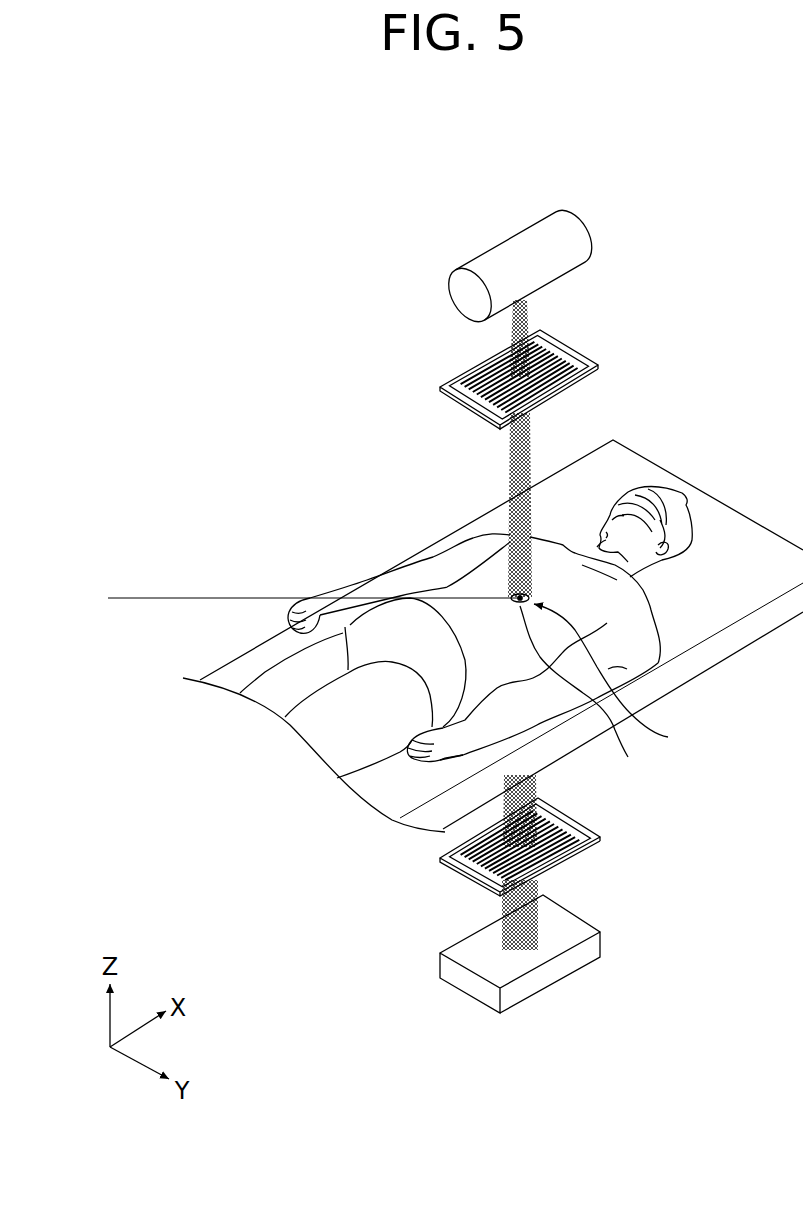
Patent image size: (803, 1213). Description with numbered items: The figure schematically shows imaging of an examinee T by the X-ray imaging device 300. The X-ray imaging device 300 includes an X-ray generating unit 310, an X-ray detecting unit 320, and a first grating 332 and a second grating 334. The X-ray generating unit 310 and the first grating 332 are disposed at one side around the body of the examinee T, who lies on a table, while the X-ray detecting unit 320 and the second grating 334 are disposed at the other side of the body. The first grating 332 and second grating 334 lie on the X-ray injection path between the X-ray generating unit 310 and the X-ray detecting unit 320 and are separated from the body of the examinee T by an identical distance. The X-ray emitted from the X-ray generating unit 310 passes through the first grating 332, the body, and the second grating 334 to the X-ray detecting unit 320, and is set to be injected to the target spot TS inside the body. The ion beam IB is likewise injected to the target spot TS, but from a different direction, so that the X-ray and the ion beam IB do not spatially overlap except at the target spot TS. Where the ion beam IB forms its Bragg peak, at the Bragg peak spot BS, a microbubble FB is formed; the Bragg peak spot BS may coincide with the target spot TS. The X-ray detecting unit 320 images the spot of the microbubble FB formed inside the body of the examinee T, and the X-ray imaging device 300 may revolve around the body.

The X-ray imaging device 300 is at (537, 201).
The X-ray generating unit 310 is at (577, 237).
The X-ray detecting unit 320 is at (598, 943).
The first grating 332 is at (598, 366).
The second grating 334 is at (600, 837).
The examinee T is at (661, 486).
The target spot TS is at (505, 593).
The ion beam IB is at (150, 598).
The Bragg peak spot BS is at (618, 680).
The microbubble FB is at (584, 697).